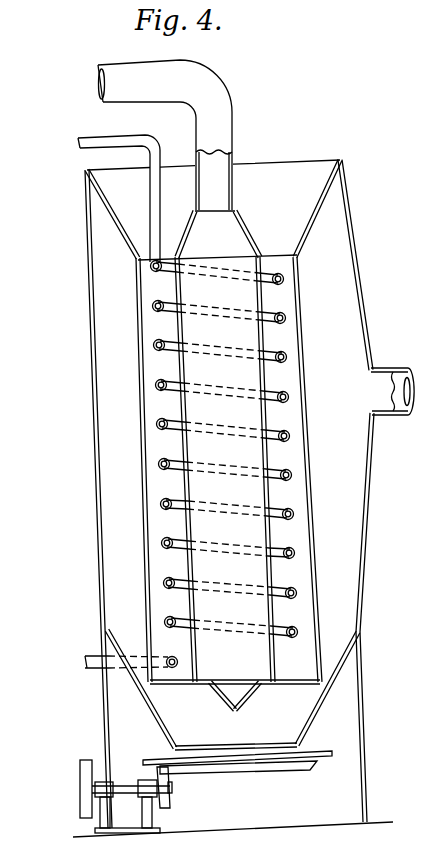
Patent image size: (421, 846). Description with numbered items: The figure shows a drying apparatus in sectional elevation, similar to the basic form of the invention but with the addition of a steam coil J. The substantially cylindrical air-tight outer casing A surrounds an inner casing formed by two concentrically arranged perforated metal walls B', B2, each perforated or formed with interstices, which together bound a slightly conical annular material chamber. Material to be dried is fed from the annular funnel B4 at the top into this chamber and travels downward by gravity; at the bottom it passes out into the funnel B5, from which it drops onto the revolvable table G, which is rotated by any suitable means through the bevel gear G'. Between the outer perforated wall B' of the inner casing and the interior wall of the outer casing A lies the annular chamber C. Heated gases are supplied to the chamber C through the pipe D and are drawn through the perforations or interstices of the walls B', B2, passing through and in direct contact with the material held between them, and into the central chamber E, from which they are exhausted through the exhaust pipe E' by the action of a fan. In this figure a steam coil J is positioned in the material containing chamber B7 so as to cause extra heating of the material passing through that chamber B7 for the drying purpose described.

The outer casing A is at (100, 546).
The perforated metal wall of inner casing B' is at (246, 470).
The perforated metal wall of inner casing B2 is at (260, 338).
The annular funnel B4 is at (213, 209).
The funnel B5 is at (232, 689).
The material containing chamber B7 is at (150, 332).
The annular chamber C is at (348, 293).
The pipe D is at (403, 376).
The chamber E is at (218, 460).
The exhaust pipe E' is at (184, 135).
The revolvable table G is at (264, 742).
The bevel gear G' is at (151, 796).
The steam coil J is at (151, 304).